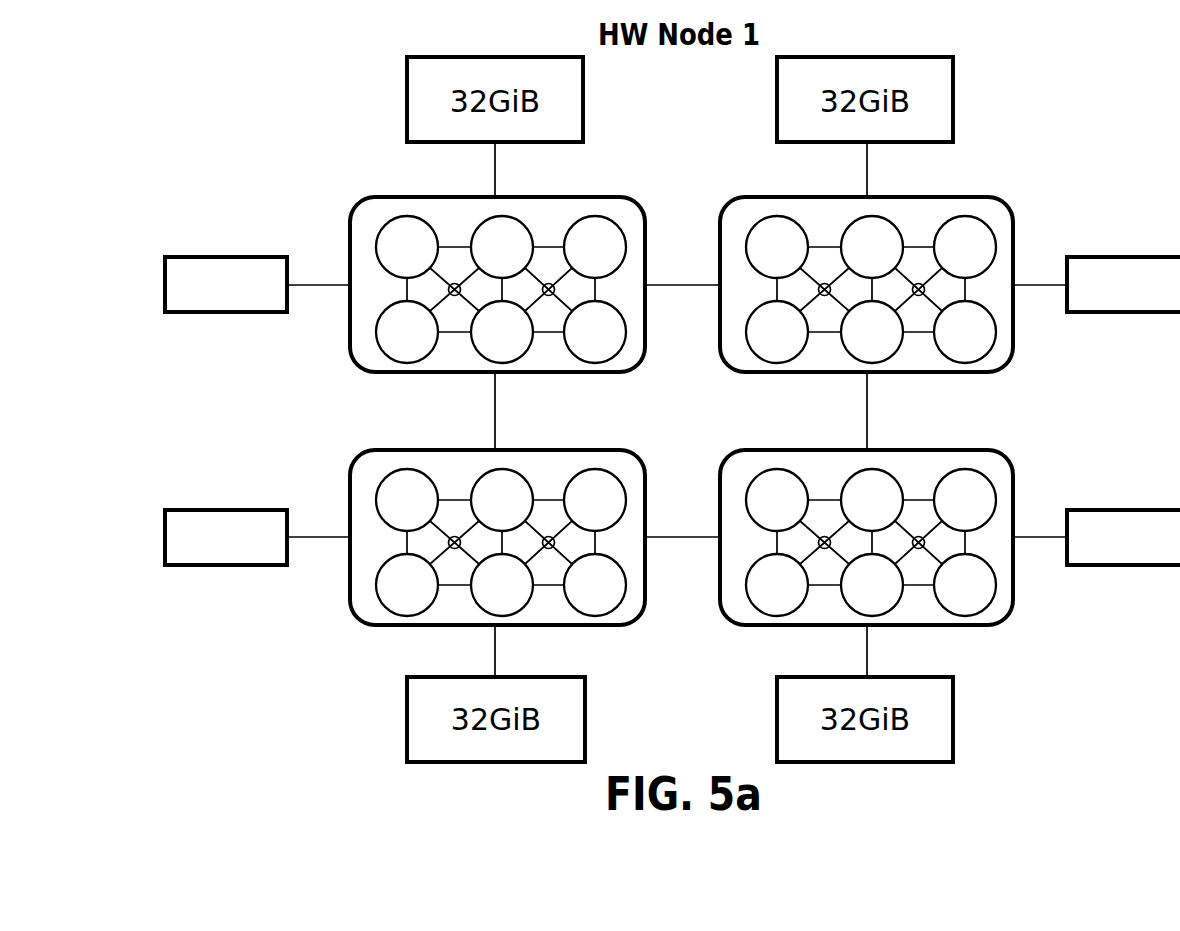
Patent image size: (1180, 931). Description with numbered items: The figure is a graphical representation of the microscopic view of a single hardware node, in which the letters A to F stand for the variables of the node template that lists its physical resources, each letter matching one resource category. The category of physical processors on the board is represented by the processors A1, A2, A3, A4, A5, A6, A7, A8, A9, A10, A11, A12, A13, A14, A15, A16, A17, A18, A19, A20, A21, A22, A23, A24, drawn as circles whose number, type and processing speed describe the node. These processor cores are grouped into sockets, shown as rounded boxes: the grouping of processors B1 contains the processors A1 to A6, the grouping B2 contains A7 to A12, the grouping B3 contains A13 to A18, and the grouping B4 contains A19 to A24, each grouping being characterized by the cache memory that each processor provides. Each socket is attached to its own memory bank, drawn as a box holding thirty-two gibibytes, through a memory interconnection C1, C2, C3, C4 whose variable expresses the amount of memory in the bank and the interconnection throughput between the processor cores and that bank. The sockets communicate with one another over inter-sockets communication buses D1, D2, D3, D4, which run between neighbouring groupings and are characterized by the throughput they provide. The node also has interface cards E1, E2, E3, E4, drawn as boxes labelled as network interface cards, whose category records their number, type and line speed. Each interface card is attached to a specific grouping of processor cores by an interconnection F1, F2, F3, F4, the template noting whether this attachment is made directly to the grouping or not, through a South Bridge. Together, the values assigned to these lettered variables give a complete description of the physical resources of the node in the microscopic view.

The processor A1 is at (407, 247).
The processor A2 is at (502, 247).
The processor A3 is at (595, 247).
The processor A4 is at (407, 332).
The processor A5 is at (502, 332).
The processor A6 is at (595, 332).
The processor A7 is at (777, 247).
The processor A8 is at (872, 247).
The processor A9 is at (965, 247).
The processor A10 is at (777, 332).
The processor A11 is at (872, 332).
The processor A12 is at (965, 332).
The processor A13 is at (407, 500).
The processor A14 is at (502, 500).
The processor A15 is at (595, 500).
The processor A16 is at (407, 585).
The processor A17 is at (502, 585).
The processor A18 is at (595, 585).
The processor A19 is at (777, 500).
The processor A20 is at (872, 500).
The processor A21 is at (965, 500).
The processor A22 is at (777, 585).
The processor A23 is at (872, 585).
The processor A24 is at (965, 585).
The grouping of processors B1 is at (481, 279).
The grouping of processors B2 is at (883, 279).
The grouping of processors B3 is at (481, 531).
The grouping of processors B4 is at (883, 531).
The memory bank interconnection C1 is at (517, 169).
The memory bank interconnection C2 is at (847, 169).
The memory bank interconnection C3 is at (517, 651).
The memory bank interconnection C4 is at (847, 651).
The inter-sockets communication bus D1 is at (682, 308).
The inter-sockets communication bus D2 is at (517, 411).
The inter-sockets communication bus D3 is at (844, 411).
The inter-sockets communication bus D4 is at (682, 514).
The interface card E1 is at (226, 284).
The interface card E2 is at (1123, 284).
The interface card E3 is at (226, 537).
The interface card E4 is at (1123, 537).
The interface card interconnection F1 is at (318, 266).
The interface card interconnection F2 is at (1040, 266).
The interface card interconnection F3 is at (318, 559).
The interface card interconnection F4 is at (1040, 559).